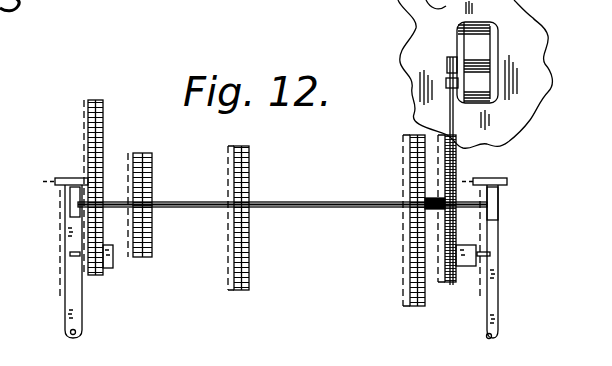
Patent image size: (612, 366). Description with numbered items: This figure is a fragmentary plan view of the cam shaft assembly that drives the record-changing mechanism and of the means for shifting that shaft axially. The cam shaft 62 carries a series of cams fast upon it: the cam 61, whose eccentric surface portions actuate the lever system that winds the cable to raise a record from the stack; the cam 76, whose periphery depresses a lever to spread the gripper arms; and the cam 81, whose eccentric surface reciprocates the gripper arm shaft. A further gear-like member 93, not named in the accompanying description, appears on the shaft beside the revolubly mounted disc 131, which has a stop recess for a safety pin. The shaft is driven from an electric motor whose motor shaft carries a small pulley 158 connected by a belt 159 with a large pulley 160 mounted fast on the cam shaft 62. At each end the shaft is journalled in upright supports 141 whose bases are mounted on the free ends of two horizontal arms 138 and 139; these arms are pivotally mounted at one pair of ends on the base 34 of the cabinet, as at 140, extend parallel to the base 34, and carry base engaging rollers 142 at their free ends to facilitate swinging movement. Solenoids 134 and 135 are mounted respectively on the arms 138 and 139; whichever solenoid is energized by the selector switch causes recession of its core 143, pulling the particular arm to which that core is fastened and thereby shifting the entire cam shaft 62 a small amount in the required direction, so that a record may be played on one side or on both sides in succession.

The base 34 is at (527, 60).
The cam 61 is at (253, 187).
The cam shaft 62 is at (314, 208).
The cam 76 is at (409, 266).
The cam 81 is at (106, 124).
The gear 93 is at (152, 172).
The disc 131 is at (152, 237).
The solenoid 134 is at (112, 257).
The solenoid 135 is at (465, 267).
The arm 138 is at (70, 302).
The arm 139 is at (499, 288).
The pivotal mounting 140 is at (76, 338).
The upright supports 141 is at (72, 197).
The base engaging rollers 142 is at (68, 178).
The core 143 is at (73, 254).
The small pulley 158 is at (460, 27).
The belt 159 is at (450, 85).
The large pulley 160 is at (444, 136).